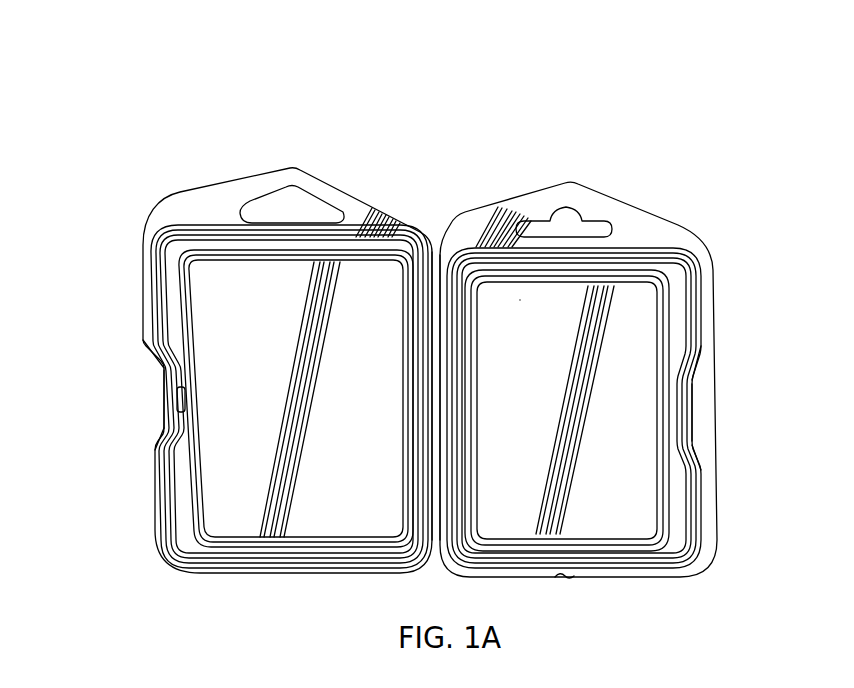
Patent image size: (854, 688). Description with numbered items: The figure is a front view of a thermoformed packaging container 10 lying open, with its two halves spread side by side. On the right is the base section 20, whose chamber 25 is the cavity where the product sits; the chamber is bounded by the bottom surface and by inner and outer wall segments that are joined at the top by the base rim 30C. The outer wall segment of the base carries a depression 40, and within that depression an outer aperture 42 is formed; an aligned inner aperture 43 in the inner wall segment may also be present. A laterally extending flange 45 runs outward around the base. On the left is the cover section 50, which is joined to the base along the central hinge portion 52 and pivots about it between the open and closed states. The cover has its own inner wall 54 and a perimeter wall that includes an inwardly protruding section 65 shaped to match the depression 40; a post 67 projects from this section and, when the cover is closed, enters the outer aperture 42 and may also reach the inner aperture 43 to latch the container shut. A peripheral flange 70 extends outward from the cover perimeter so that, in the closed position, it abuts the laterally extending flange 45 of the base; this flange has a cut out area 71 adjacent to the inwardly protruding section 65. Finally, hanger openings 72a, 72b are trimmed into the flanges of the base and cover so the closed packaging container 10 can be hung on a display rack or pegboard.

The packaging container 10 is at (108, 203).
The base section 20 is at (477, 235).
The chamber 25 is at (608, 498).
The base rim 30C is at (811, 671).
The depression 40 is at (692, 446).
The outer aperture 42 is at (690, 412).
The inner aperture 43 is at (678, 410).
The laterally extending flange 45 is at (703, 348).
The cover section 50 is at (194, 218).
The hinge portion 52 is at (428, 243).
The cover inner wall 54 is at (230, 543).
The inwardly protruding section 65 is at (180, 382).
The post 67 is at (175, 402).
The peripheral flange 70 is at (147, 268).
The cut out area 71 is at (165, 365).
The hanger opening 72a is at (567, 214).
The hanger opening 72b is at (258, 205).